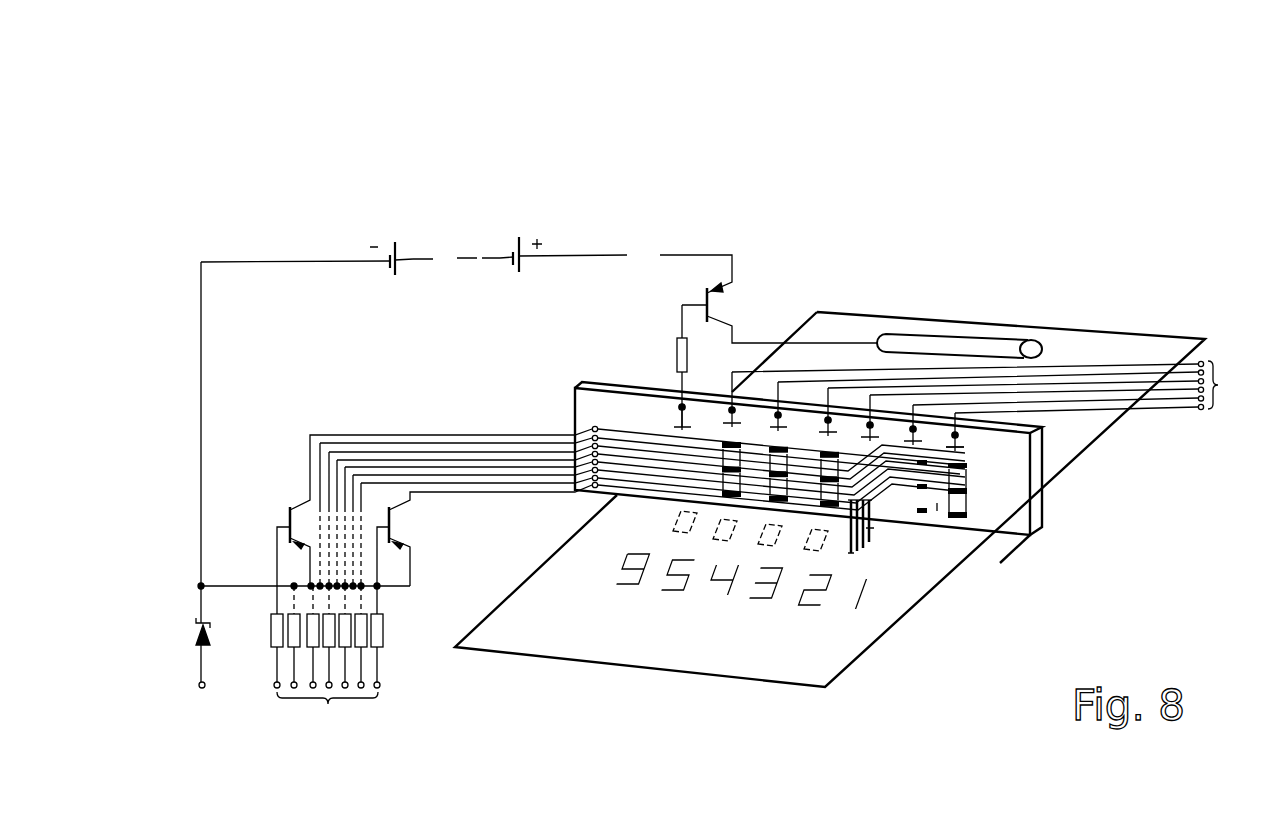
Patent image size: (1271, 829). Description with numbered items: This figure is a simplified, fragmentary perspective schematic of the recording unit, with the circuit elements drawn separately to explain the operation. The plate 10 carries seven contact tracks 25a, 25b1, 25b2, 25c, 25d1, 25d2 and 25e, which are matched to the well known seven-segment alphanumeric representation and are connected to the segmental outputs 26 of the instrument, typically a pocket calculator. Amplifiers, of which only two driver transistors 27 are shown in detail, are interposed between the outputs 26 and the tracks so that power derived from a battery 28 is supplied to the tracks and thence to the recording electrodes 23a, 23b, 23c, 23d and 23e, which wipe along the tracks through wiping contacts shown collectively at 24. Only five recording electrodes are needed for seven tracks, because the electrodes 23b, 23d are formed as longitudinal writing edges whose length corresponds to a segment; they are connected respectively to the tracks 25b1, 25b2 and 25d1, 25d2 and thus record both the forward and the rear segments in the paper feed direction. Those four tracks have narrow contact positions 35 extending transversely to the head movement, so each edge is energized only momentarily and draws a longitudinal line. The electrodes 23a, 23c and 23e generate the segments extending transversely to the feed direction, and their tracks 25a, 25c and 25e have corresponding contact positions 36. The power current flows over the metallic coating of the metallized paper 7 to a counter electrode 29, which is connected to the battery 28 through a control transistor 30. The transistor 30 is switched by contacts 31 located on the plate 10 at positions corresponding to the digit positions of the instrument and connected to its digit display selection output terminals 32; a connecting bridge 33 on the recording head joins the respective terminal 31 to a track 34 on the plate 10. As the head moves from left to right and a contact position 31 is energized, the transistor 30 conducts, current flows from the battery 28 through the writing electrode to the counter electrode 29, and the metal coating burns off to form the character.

The metallized paper 7 is at (1102, 343).
The plate 10 is at (548, 430).
The recording electrode 23a is at (850, 522).
The longitudinal writing edge 23b is at (858, 540).
The recording electrode 23c is at (875, 531).
The longitudinal writing edge 23d is at (868, 530).
The recording electrode 23e is at (875, 528).
The wiping contacts 24 is at (890, 522).
The contact track 25a is at (676, 436).
The contact track 25b1 is at (662, 442).
The contact track 25b2 is at (646, 453).
The contact track 25c is at (630, 450).
The contact track 25d1 is at (690, 478).
The contact track 25d2 is at (660, 480).
The contact track 25e is at (617, 495).
The segmental outputs 26 is at (328, 705).
The driver transistors 27 is at (287, 518).
The battery 28 is at (427, 258).
The counter electrode 29 is at (957, 347).
The control transistor 30 is at (706, 296).
The contacts 31 is at (957, 452).
The digit display selection output terminals 32 is at (1220, 385).
The connecting bridge 33 is at (890, 455).
The track 34 is at (752, 440).
The contact positions 35 is at (958, 462).
The contact positions 36 is at (937, 507).